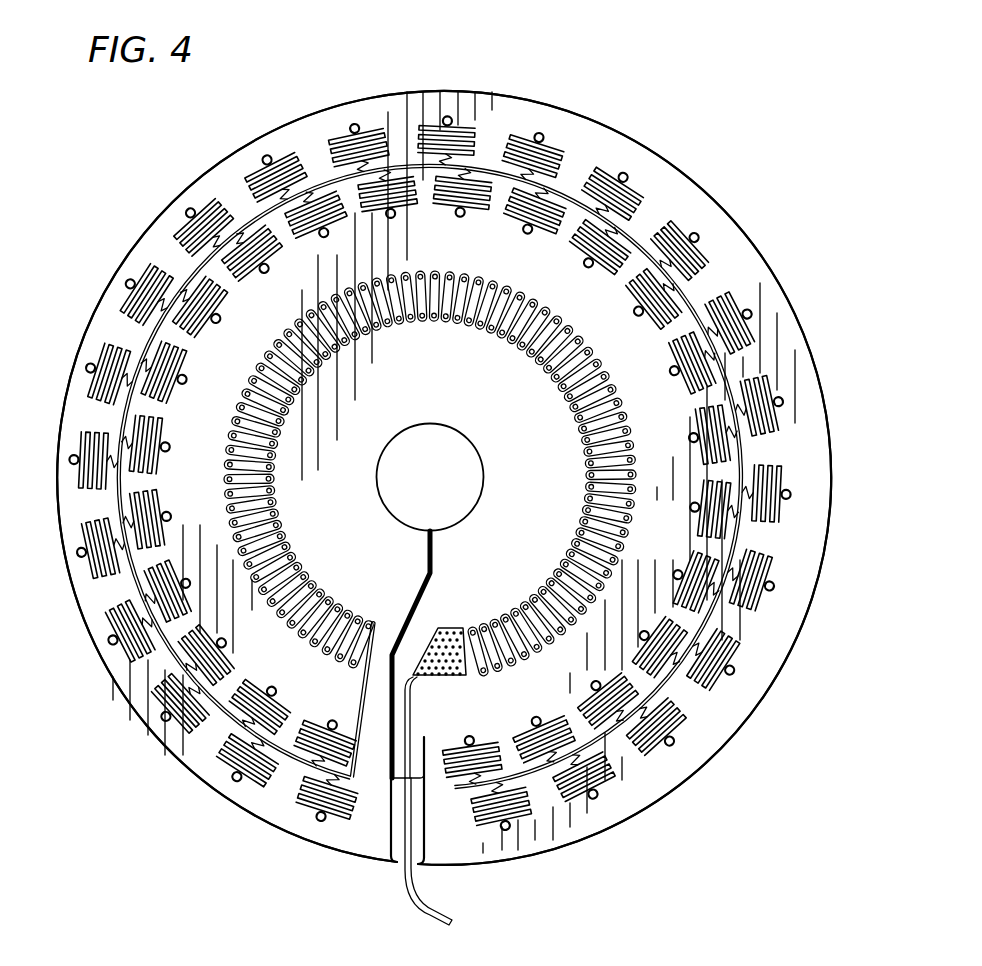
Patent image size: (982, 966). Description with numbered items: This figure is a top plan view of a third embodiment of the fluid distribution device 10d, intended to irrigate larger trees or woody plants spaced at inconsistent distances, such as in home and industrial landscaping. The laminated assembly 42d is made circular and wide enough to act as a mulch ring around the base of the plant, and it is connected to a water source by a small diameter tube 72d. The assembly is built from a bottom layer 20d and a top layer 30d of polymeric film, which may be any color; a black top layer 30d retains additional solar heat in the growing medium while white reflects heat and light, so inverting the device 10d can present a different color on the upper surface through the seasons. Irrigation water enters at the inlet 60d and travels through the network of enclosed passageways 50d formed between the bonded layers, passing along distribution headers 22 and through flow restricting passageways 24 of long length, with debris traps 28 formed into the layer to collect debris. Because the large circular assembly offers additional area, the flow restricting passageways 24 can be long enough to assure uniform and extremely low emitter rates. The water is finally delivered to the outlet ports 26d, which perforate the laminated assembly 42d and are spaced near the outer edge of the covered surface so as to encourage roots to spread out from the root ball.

The fluid distribution device 10d is at (599, 113).
The bottom layer 20d is at (728, 227).
The top layer 30d is at (672, 186).
The laminated assembly 42d is at (396, 96).
The flow restricting passageways 24 is at (313, 579).
The debris traps 28 is at (467, 677).
The distribution headers 22 is at (410, 733).
The outlet ports 26d is at (233, 776).
The inlet 60d is at (420, 786).
The enclosed passageways 50d is at (551, 808).
The small diameter tube 72d is at (448, 920).